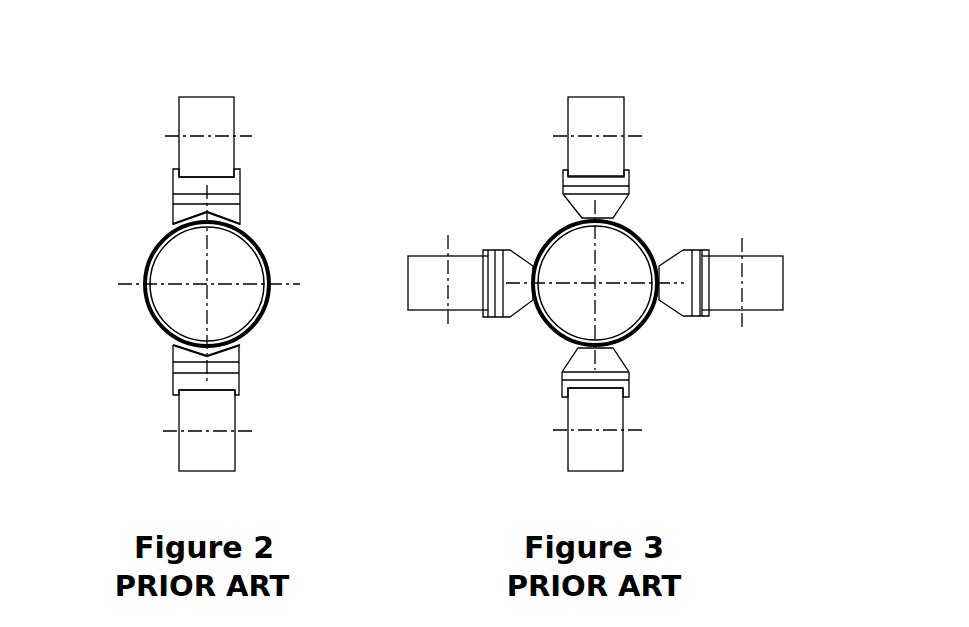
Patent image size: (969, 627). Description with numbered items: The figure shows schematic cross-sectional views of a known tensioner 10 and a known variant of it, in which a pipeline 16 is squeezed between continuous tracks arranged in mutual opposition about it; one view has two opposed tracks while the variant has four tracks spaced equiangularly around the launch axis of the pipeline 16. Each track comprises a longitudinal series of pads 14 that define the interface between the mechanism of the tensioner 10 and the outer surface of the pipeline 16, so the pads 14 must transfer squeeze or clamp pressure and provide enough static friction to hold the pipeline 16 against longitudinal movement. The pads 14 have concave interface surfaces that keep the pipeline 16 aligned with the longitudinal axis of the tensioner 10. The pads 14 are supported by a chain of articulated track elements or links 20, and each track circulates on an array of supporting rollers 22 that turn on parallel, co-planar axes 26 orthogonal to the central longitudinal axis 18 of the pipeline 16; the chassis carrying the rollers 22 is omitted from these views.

In FIG. 2, the tensioner 10 is at (121, 146).
In FIG. 3, the tensioner 10 is at (498, 166).
In FIG. 2, the pads 14 is at (177, 214).
In FIG. 3, the pads 14 is at (613, 208).
In FIG. 2, the pipeline 16 is at (260, 243).
In FIG. 3, the pipeline 16 is at (633, 333).
In FIG. 2, the central longitudinal axis 18 is at (207, 284).
In FIG. 3, the central longitudinal axis 18 is at (595, 283).
In FIG. 2, the track elements or links 20 is at (235, 183).
In FIG. 3, the track elements or links 20 is at (628, 388).
In FIG. 2, the supporting rollers 22 is at (208, 105).
In FIG. 3, the supporting rollers 22 is at (618, 118).
In FIG. 2, the axes 26 is at (248, 133).
In FIG. 3, the axes 26 is at (742, 245).